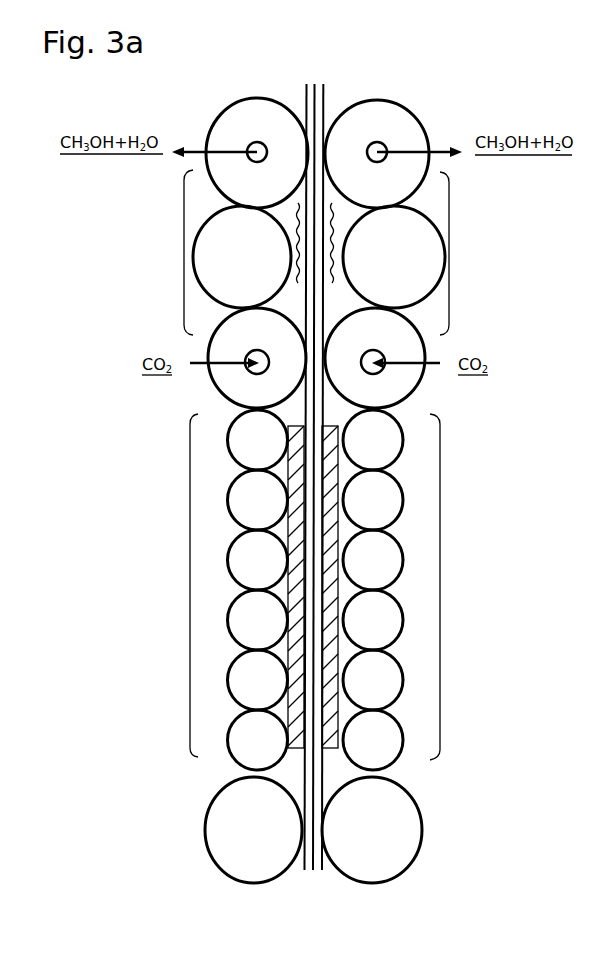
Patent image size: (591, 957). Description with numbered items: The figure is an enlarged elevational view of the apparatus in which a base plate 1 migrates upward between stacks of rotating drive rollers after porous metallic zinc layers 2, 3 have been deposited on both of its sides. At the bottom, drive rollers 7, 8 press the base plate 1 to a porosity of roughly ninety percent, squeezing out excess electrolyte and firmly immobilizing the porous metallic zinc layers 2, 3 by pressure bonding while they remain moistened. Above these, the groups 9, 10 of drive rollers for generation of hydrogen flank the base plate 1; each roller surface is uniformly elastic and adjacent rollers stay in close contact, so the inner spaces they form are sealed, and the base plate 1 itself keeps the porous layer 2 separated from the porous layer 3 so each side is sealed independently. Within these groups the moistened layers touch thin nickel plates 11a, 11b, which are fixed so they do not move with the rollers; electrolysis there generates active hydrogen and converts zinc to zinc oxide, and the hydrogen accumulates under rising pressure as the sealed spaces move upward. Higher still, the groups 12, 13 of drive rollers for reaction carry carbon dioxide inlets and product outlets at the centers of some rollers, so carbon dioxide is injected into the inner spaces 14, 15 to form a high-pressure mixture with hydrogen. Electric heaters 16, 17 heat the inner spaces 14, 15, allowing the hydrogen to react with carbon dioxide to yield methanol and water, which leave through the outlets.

The base plate 1 is at (313, 868).
The porous metallic zinc layer 2 is at (302, 845).
The porous metallic zinc layer 3 is at (322, 845).
The drive roller 7 is at (225, 872).
The drive roller 8 is at (398, 873).
The group of drive rollers for generation of hydrogen 9 is at (190, 585).
The group of drive rollers for generation of hydrogen 10 is at (445, 590).
The thin nickel plate 11a is at (297, 607).
The thin nickel plate 11b is at (332, 537).
The group of drive rollers for reaction 12 is at (184, 263).
The group of drive rollers for reaction 13 is at (449, 265).
The inner space 14 is at (288, 302).
The inner space 15 is at (342, 303).
The electric heater 16 is at (297, 230).
The electric heater 17 is at (333, 236).